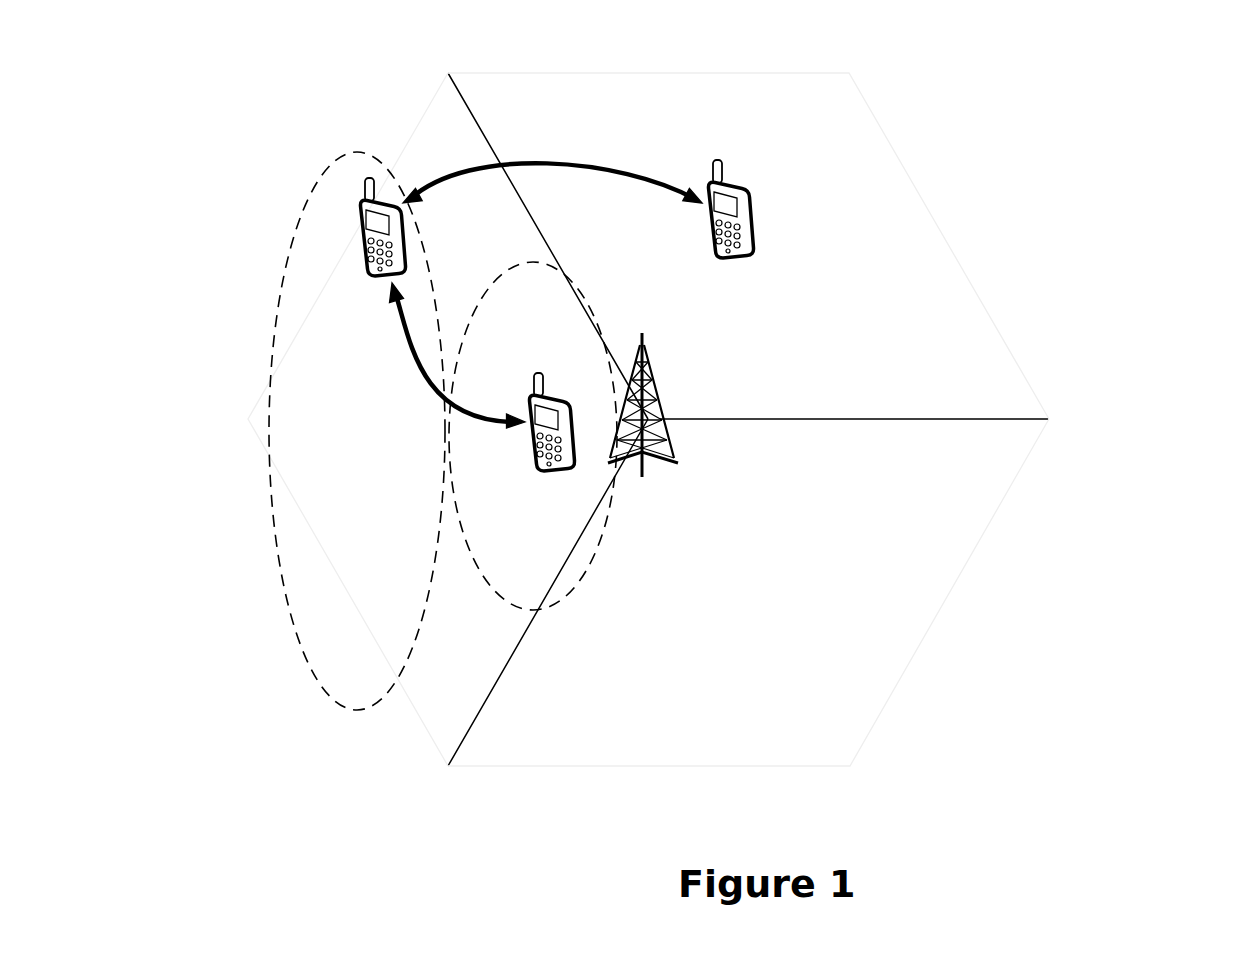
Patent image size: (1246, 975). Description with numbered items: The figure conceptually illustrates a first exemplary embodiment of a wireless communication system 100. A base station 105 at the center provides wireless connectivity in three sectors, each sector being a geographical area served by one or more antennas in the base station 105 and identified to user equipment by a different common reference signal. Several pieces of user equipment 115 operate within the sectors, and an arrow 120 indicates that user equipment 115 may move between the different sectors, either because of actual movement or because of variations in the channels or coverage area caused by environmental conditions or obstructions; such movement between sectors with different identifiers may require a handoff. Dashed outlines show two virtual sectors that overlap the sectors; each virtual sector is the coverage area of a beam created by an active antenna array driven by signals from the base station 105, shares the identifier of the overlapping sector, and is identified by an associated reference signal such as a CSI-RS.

The wireless communication system 100 is at (1113, 97).
The base station 105 is at (642, 478).
The user equipment 115 is at (737, 264).
The arrow 120 is at (557, 160).